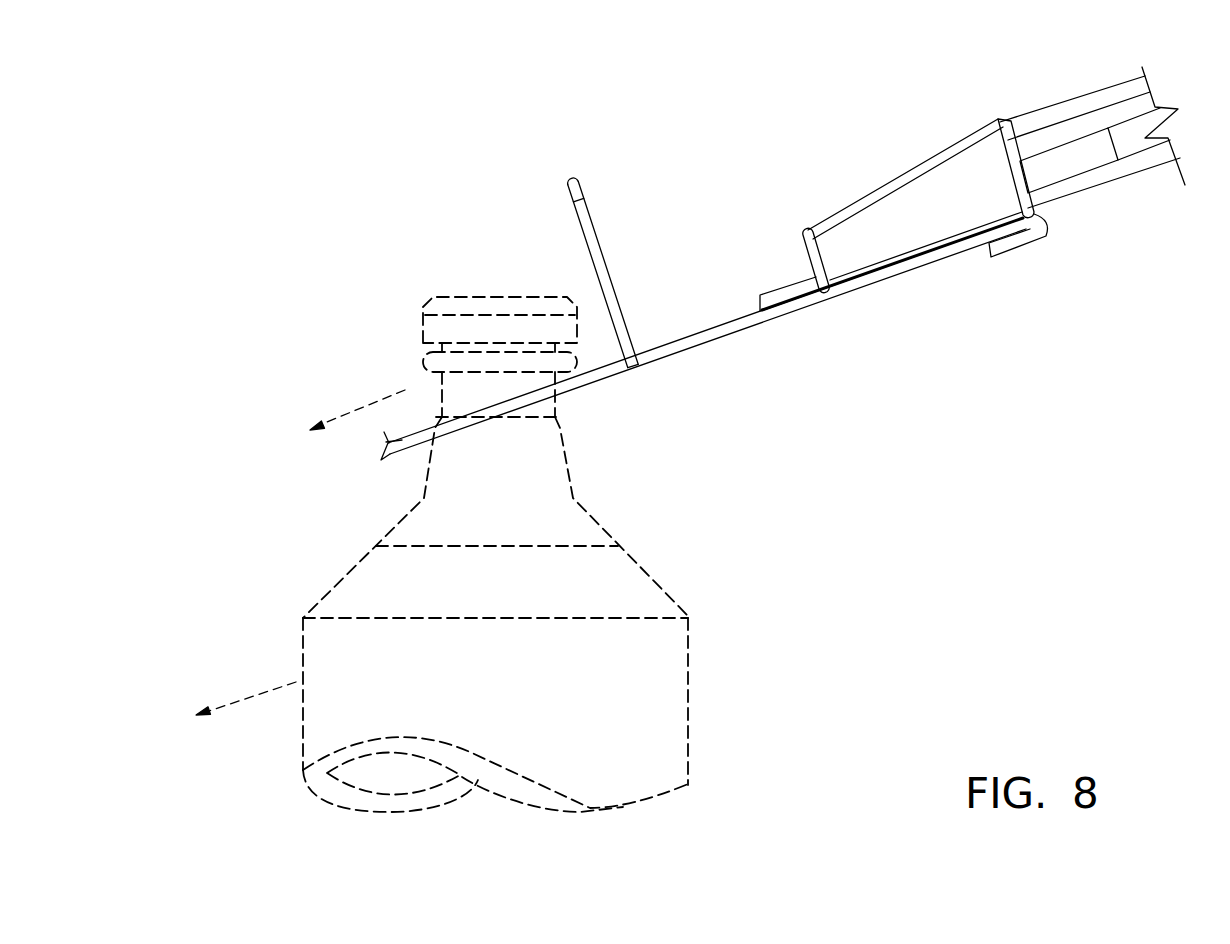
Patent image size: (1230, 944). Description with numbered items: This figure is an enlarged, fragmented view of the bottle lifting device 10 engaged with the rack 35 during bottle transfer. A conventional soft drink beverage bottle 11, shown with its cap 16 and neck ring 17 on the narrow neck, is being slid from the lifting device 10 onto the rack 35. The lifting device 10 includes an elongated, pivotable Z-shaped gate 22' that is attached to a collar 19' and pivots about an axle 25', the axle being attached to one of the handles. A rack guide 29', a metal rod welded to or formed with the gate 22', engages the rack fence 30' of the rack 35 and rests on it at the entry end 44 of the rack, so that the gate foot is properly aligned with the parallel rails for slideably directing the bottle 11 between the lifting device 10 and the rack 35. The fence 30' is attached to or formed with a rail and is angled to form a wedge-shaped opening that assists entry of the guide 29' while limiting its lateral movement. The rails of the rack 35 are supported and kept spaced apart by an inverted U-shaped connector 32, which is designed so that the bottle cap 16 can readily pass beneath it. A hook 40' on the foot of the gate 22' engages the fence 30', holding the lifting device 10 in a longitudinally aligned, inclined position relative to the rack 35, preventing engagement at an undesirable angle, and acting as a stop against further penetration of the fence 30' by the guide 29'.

The bottle lifting device 10 is at (1040, 88).
The beverage bottle 11 is at (372, 579).
The cap 16 is at (468, 297).
The neck ring 17 is at (420, 358).
The collar 19' is at (1069, 184).
The Z-shaped gate 22' is at (1090, 163).
The axle 25' is at (1152, 164).
The rack guide 29' is at (771, 273).
The rack fence 30' is at (918, 206).
The connector 32 is at (571, 197).
The rack 35 is at (618, 178).
The hook 40' is at (1039, 259).
The entry end 44 is at (935, 130).